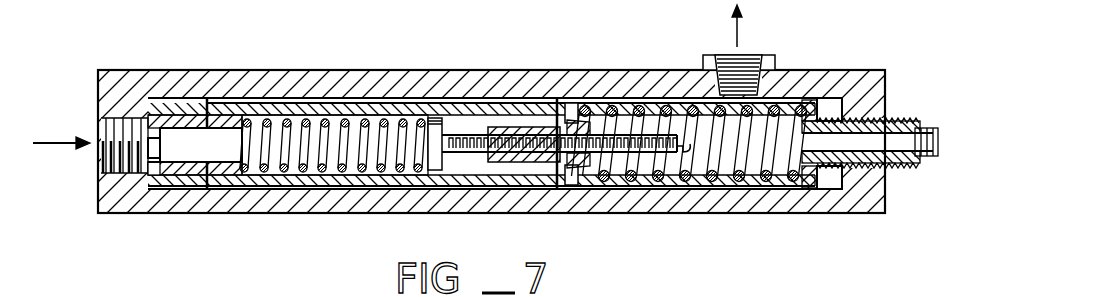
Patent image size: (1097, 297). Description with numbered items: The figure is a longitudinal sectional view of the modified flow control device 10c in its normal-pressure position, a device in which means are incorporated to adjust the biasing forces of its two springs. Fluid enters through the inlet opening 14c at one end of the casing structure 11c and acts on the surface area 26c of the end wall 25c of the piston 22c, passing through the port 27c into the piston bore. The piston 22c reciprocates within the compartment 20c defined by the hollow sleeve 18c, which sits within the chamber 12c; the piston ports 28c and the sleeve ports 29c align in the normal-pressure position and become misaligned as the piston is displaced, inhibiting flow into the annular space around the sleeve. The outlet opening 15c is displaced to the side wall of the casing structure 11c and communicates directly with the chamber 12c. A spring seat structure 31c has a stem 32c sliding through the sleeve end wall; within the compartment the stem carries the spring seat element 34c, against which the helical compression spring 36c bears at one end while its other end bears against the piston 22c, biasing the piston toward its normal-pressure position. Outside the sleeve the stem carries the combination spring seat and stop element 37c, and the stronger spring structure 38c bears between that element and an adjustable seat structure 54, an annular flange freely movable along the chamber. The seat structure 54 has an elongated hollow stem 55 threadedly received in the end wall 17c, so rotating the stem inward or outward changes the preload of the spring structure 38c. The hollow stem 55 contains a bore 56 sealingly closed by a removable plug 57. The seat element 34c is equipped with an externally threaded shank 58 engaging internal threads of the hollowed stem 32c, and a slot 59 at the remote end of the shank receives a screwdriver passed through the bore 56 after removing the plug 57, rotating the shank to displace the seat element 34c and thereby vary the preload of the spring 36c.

The modified flow control device 10c is at (814, 70).
The casing structure 11c is at (450, 70).
The chamber 12c is at (753, 177).
The inlet opening 14c is at (112, 161).
The outlet opening 15c is at (737, 63).
The end wall of casing structure 17c is at (867, 183).
The sleeve 18c is at (385, 110).
The compartment 20c is at (312, 167).
The piston 22c is at (228, 122).
The end wall of piston 25c is at (157, 167).
The surface area 26c is at (150, 175).
The port 27c is at (149, 143).
The piston ports 28c is at (222, 170).
The sleeve ports 29c is at (218, 180).
The spring seat structure 31c is at (512, 162).
The stem 32c is at (512, 127).
The spring seat element 34c is at (435, 167).
The helical compression spring 36c is at (342, 120).
The combination spring seat and stop element 37c is at (573, 182).
The spring structure 38c is at (640, 110).
The seat structure 54 is at (817, 103).
The hollow stem 55 is at (890, 120).
The bore 56 is at (883, 143).
The plug 57 is at (940, 143).
The threaded shank 58 is at (560, 137).
The slot 59 is at (690, 165).